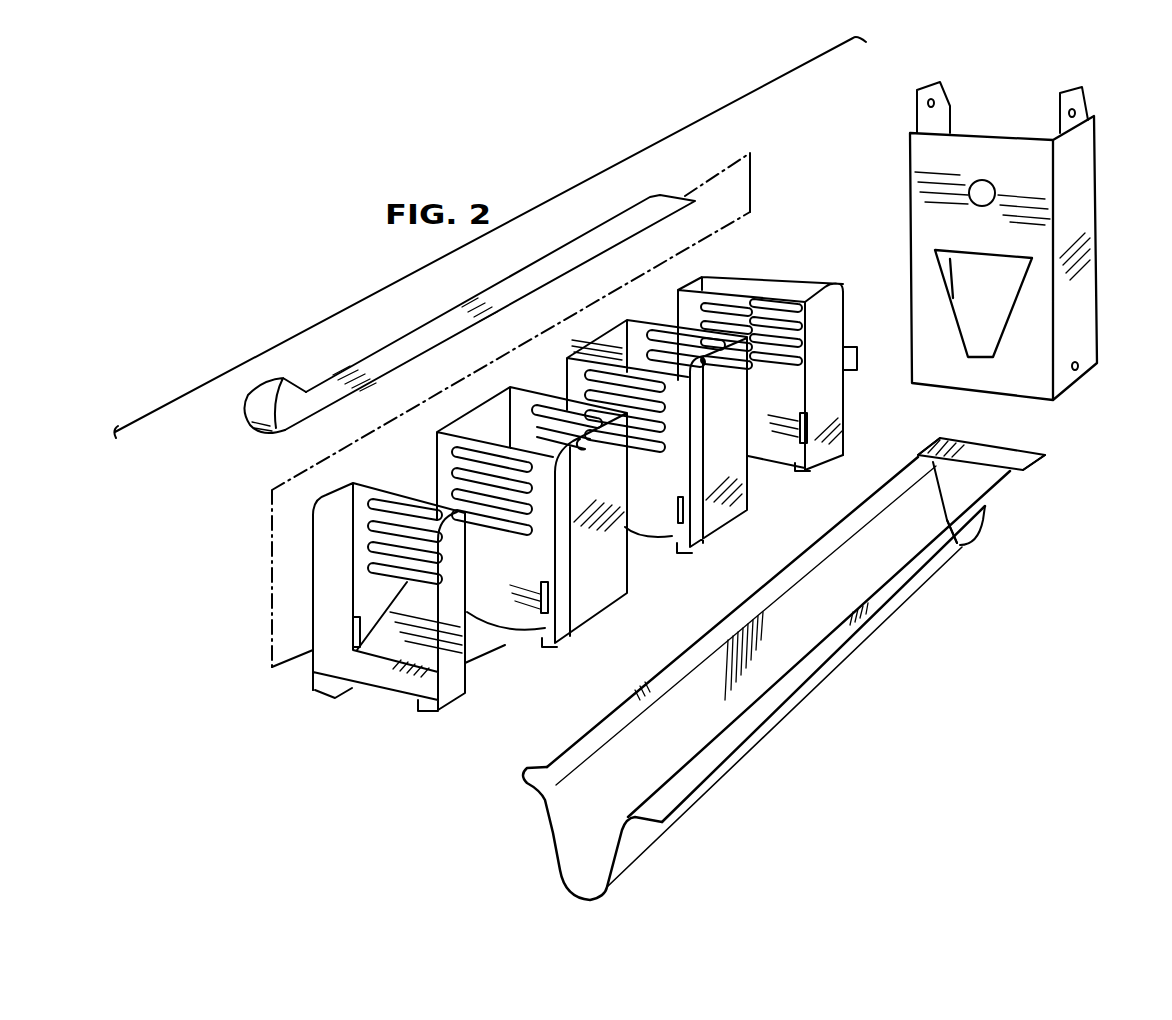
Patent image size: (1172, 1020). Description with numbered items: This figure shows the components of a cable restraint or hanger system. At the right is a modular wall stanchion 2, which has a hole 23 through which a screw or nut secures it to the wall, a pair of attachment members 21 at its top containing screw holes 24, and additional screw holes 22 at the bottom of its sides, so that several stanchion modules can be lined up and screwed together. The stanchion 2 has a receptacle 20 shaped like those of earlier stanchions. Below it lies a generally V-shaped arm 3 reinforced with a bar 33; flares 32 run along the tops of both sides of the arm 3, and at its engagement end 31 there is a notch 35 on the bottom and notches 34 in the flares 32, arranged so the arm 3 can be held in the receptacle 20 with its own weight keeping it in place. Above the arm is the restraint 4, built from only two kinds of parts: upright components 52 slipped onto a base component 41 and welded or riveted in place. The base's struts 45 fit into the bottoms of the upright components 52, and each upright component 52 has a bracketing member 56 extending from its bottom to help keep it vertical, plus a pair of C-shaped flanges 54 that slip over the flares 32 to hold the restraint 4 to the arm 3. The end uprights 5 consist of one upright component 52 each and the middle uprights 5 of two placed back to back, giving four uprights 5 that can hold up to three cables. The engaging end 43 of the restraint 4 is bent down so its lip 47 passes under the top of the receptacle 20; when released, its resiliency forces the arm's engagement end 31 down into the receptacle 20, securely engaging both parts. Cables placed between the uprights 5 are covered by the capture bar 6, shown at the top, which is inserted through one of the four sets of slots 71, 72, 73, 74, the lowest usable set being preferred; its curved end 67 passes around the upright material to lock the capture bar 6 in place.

The modular wall stanchion 2 is at (1037, 220).
The receptacle 20 is at (1013, 312).
The attachment members 21 is at (940, 82).
The bottom screw holes 22 is at (1079, 370).
The hole 23 is at (986, 180).
The top screw holes 24 is at (937, 104).
The V-shaped arm 3 is at (767, 650).
The engagement end of the arm 31 is at (965, 580).
The flares 32 is at (535, 776).
The bar 33 is at (963, 443).
The notches in the flares 34 is at (918, 455).
The bottom notch 35 is at (965, 545).
The restraint 4 is at (490, 411).
The base component 41 is at (388, 674).
The engaging end of the restraint 43 is at (851, 330).
The struts 45 is at (312, 668).
The lip 47 is at (855, 358).
The uprights 5 is at (591, 506).
The upright component 52 is at (580, 370).
The flanges 54 is at (318, 697).
The bracketing member 56 is at (637, 526).
The capture bar 6 is at (556, 268).
The curved end 67 is at (240, 396).
The first set of slots 71 is at (373, 504).
The second set of slots 72 is at (373, 526).
The third set of slots 73 is at (373, 547).
The fourth set of slots 74 is at (373, 568).